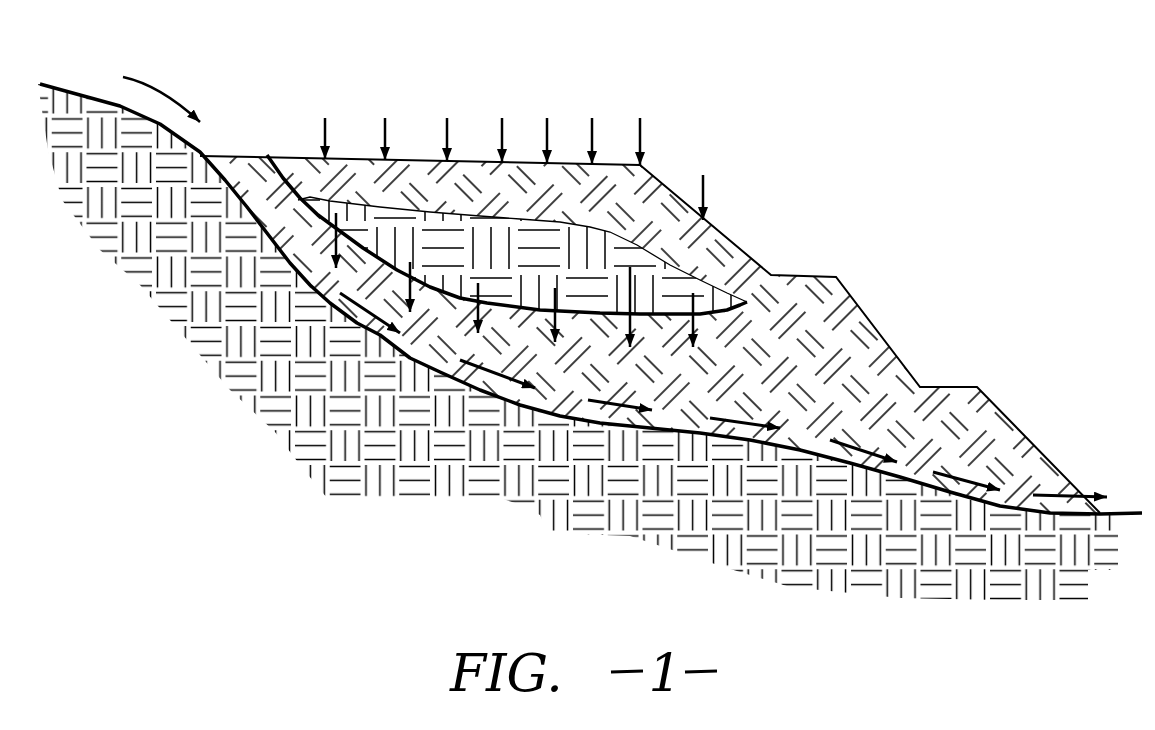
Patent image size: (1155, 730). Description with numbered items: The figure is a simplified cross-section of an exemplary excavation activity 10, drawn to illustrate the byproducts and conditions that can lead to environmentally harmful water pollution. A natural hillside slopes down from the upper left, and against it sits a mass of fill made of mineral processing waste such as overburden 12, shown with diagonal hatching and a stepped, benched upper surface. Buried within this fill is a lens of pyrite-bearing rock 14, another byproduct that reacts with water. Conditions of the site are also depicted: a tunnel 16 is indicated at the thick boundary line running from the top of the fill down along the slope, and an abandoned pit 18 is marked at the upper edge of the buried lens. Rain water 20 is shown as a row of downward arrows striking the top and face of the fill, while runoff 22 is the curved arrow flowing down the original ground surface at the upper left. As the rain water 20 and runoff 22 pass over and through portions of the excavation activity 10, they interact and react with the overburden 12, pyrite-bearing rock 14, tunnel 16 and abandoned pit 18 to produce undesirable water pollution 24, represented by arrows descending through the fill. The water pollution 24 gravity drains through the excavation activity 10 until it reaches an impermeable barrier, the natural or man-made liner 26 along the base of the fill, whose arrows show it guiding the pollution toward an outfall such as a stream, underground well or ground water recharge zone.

The excavation activity 10 is at (925, 92).
The overburden 12 is at (873, 392).
The buried pyrite-bearing rock 14 is at (450, 245).
The tunnel 16 is at (288, 168).
The abandoned pit 18 is at (700, 280).
The rain water 20 is at (547, 142).
The runoff 22 is at (145, 81).
The undesirable water pollution 24 is at (697, 331).
The liner 26 is at (318, 297).